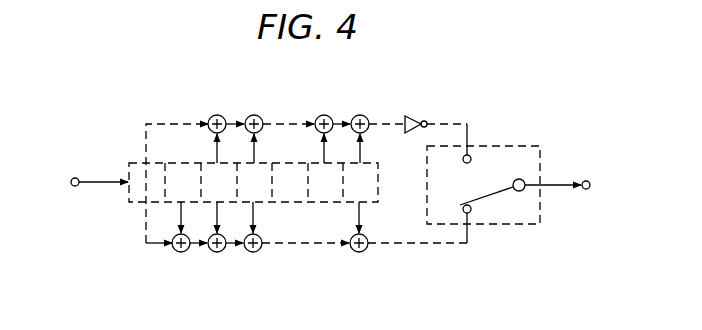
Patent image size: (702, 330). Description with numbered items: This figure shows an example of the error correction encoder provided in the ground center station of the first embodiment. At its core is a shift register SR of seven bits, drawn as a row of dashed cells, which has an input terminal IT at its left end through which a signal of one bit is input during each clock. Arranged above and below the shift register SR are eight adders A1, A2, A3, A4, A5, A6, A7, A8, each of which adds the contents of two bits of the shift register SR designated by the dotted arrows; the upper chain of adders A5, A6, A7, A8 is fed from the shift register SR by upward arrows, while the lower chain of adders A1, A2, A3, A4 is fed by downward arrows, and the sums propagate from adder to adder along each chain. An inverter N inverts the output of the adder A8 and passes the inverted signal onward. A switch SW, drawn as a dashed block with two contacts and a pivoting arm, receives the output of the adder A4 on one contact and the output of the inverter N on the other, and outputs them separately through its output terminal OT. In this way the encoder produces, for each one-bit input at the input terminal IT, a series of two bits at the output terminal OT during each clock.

The adder A1 is at (181, 252).
The adder A2 is at (217, 252).
The adder A3 is at (253, 252).
The adder A4 is at (359, 252).
The adder A5 is at (218, 113).
The adder A6 is at (257, 113).
The adder A7 is at (326, 113).
The adder A8 is at (363, 113).
The inverter N is at (416, 116).
The switch SW is at (511, 146).
The shift register SR is at (379, 182).
The input terminal IT is at (83, 183).
The output terminal OT is at (574, 186).